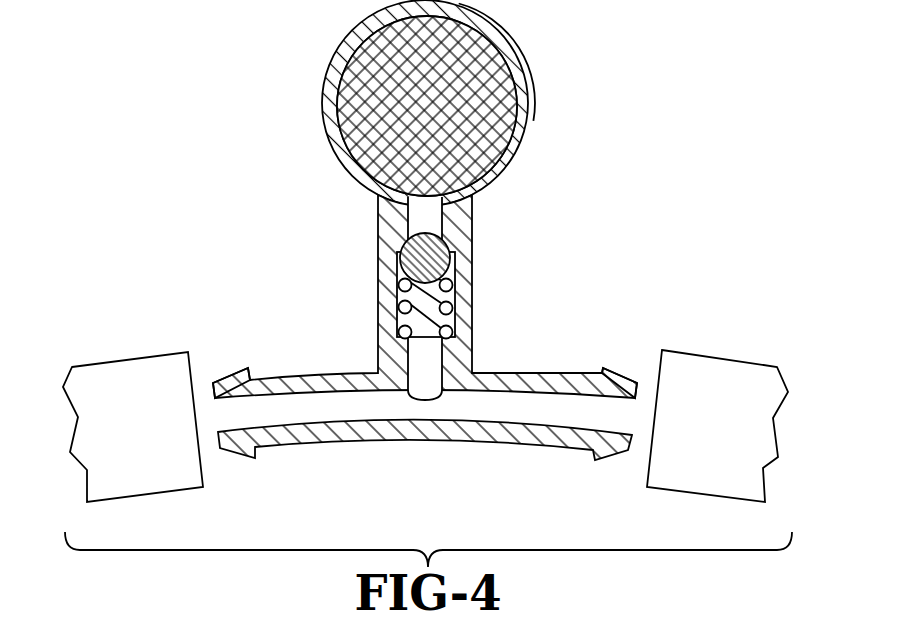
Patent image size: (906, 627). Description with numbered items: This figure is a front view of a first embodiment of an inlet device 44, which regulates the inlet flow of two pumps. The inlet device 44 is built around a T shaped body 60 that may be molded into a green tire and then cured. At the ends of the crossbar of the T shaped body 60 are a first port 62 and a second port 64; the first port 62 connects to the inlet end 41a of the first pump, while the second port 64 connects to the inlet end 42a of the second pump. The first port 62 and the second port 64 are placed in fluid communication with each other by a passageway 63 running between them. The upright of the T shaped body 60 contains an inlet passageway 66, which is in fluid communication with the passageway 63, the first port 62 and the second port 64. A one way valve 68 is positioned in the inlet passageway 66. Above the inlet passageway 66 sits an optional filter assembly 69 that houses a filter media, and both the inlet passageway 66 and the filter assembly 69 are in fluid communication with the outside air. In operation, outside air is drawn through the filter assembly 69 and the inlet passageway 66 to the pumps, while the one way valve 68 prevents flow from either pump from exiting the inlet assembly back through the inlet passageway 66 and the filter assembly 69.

The inlet device 44 is at (422, 251).
The filter assembly 69 is at (463, 100).
The inlet passageway 66 is at (430, 225).
The one way valve 68 is at (420, 290).
The T shaped body 60 is at (472, 323).
The first port 62 is at (232, 375).
The second port 64 is at (573, 377).
The passageway 63 is at (495, 410).
The inlet end 41a is at (135, 387).
The inlet end 42a is at (722, 385).